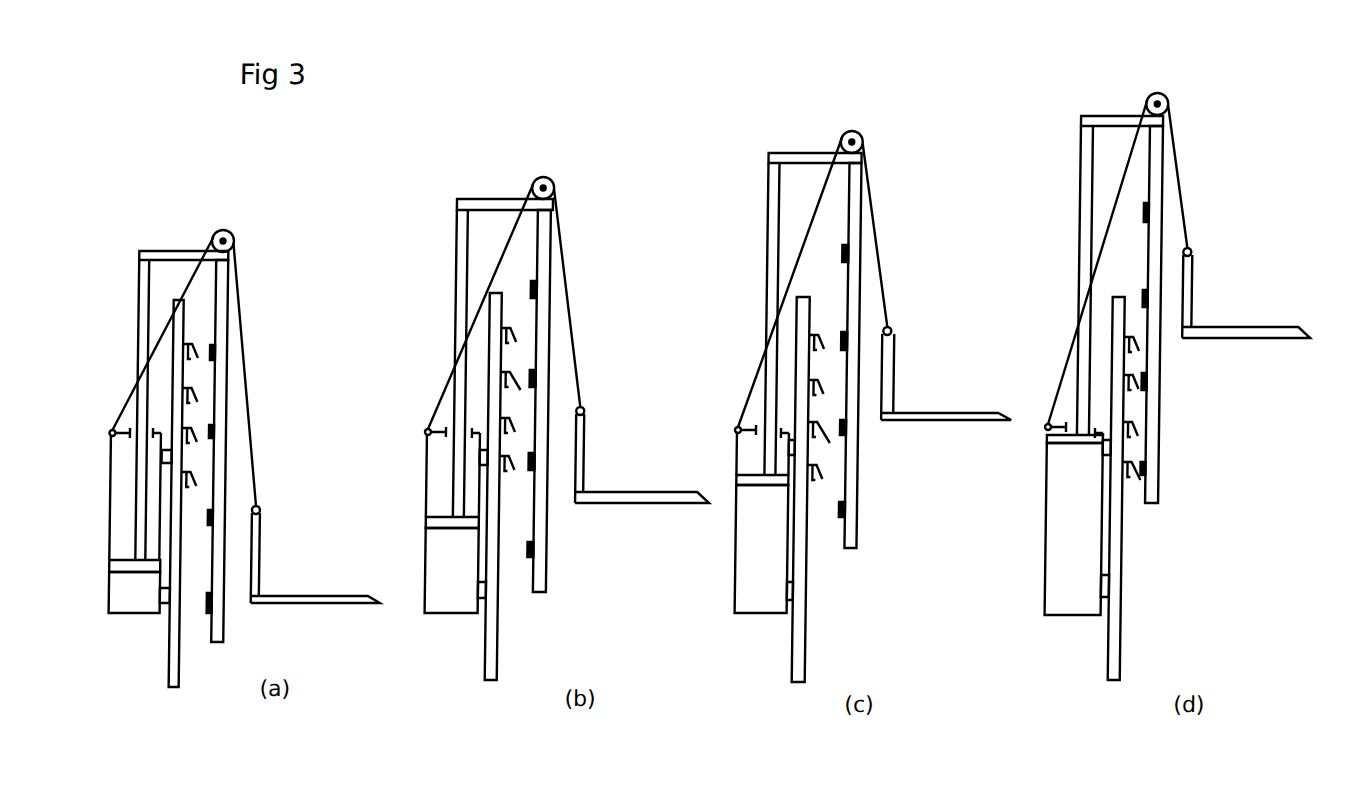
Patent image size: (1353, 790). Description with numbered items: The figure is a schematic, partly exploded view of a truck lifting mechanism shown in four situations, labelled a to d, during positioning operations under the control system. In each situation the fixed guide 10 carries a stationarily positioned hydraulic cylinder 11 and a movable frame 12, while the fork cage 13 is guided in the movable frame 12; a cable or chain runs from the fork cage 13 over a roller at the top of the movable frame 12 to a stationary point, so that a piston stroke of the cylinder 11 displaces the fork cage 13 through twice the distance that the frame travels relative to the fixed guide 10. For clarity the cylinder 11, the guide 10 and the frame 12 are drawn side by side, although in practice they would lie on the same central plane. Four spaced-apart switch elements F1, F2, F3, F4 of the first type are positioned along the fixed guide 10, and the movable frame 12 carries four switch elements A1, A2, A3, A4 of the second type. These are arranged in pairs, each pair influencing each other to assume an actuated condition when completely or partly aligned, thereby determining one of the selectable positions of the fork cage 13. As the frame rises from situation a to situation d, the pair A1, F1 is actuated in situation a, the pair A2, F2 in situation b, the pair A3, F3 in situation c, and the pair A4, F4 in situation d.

The fixed guide 10 is at (172, 652).
The cylinder 11 is at (148, 598).
The movable frame 12 is at (222, 317).
The fork cage 13 is at (285, 595).
The switch element A1 is at (217, 352).
The switch element A2 is at (217, 432).
The switch element A3 is at (213, 520).
The switch element A4 is at (213, 600).
The switch element F1 is at (197, 365).
The switch element F2 is at (356, 399).
The switch element F3 is at (509, 446).
The switch element F4 is at (665, 486).